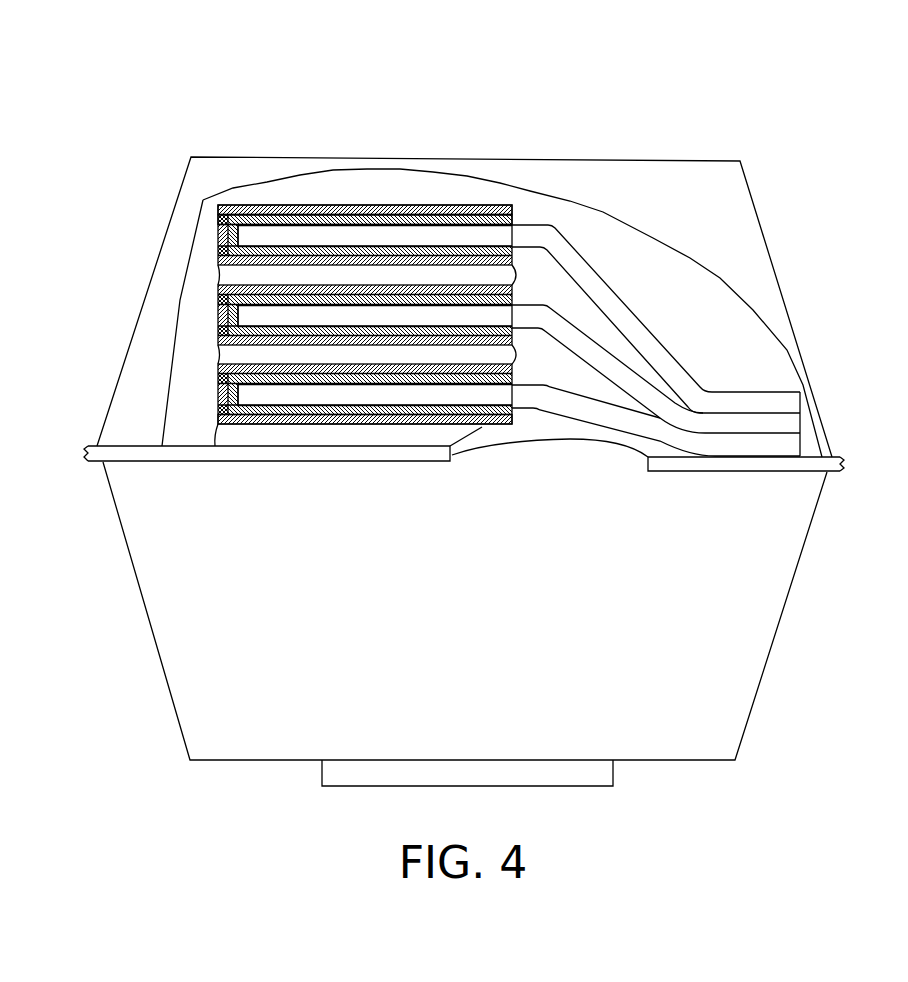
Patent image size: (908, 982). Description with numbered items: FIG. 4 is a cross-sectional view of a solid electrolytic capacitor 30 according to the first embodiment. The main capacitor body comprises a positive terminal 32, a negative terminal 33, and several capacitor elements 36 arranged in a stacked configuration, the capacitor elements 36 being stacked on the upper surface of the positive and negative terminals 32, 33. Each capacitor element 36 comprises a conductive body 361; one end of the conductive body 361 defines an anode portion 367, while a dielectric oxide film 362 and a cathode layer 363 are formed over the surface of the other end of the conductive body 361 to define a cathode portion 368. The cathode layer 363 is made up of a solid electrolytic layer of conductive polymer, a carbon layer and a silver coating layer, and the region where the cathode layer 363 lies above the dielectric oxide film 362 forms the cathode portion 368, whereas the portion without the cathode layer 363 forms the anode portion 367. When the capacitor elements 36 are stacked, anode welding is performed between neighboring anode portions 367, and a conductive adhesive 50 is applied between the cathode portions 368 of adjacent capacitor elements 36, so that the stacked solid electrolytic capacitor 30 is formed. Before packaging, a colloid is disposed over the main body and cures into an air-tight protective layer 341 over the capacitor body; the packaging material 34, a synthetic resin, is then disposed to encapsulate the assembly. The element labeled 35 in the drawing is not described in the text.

The solid electrolytic capacitor 30 is at (609, 134).
The positive terminal 32 is at (805, 462).
The negative terminal 33 is at (152, 455).
The packaging material 34 is at (725, 199).
The protective layer 341 is at (637, 262).
The bottom wall 35 is at (494, 432).
The capacitor element 36 is at (287, 236).
The conductive body 361 is at (628, 318).
The dielectric oxide film 362 is at (387, 215).
The cathode layer 363 is at (307, 207).
The anode portion 367 is at (607, 417).
The cathode portion 368 is at (347, 430).
The conductive adhesive 50 is at (300, 357).